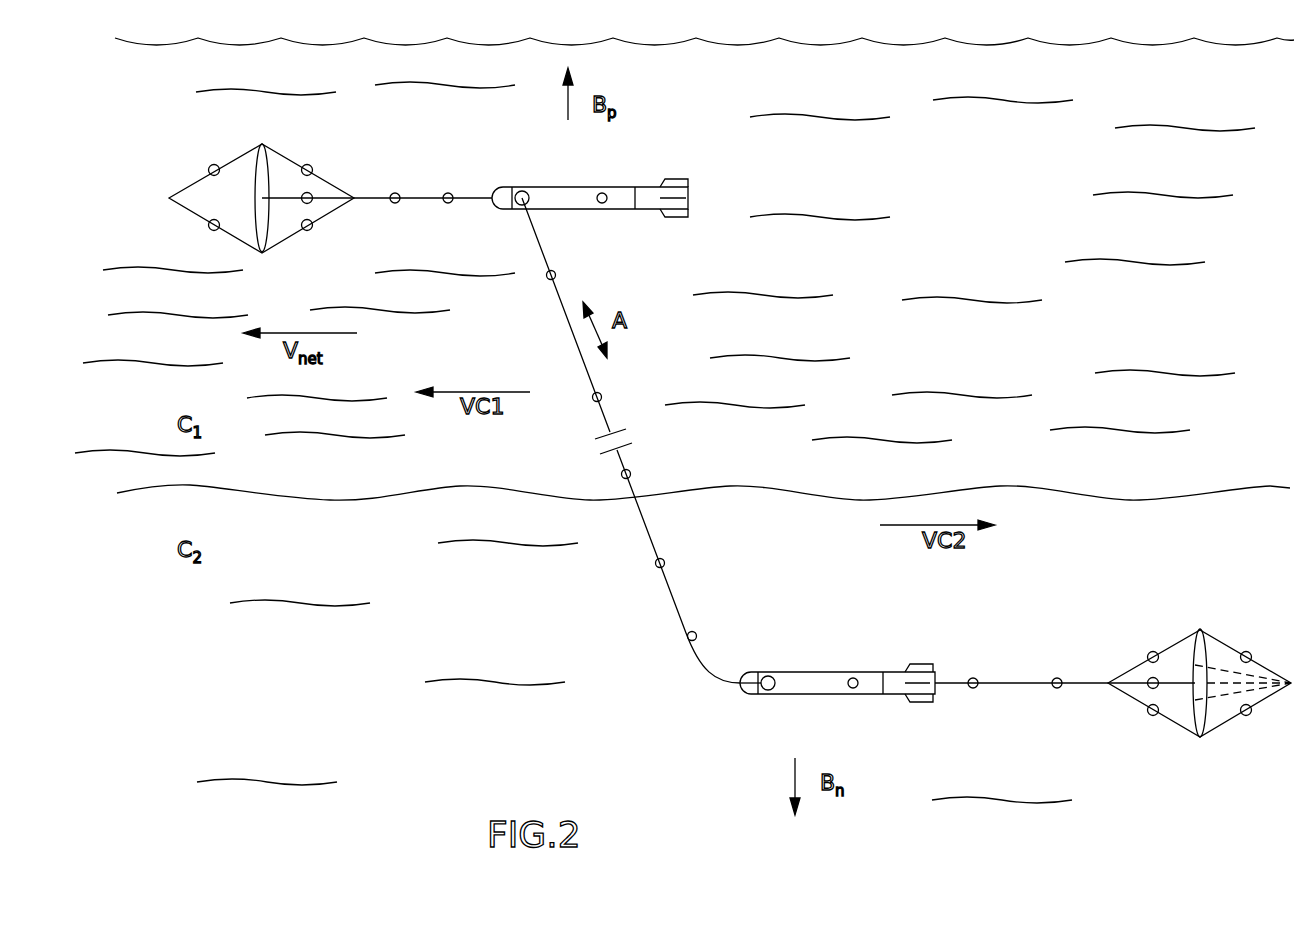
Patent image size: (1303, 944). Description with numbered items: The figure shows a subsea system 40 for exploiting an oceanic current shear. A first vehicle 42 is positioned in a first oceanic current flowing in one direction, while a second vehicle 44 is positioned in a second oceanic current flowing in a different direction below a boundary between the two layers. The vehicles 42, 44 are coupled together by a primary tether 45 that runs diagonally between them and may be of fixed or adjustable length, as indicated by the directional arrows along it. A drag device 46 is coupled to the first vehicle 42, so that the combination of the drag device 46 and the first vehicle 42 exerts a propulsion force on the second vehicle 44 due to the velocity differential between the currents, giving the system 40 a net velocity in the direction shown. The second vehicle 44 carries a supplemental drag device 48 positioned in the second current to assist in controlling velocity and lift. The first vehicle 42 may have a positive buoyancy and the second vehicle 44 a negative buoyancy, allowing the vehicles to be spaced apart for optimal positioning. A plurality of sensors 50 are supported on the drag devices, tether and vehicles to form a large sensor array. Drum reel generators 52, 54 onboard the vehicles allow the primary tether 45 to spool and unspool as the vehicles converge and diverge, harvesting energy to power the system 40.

The subsea system 40 is at (948, 250).
The first vehicle 42 is at (635, 150).
The second vehicle 44 is at (877, 633).
The primary tether 45 is at (672, 578).
The drag device 46 is at (214, 141).
The supplemental drag device 48 is at (1254, 738).
The sensors 50 is at (312, 166).
The drum reel generator 52 is at (521, 191).
The drum reel generator 54 is at (768, 690).